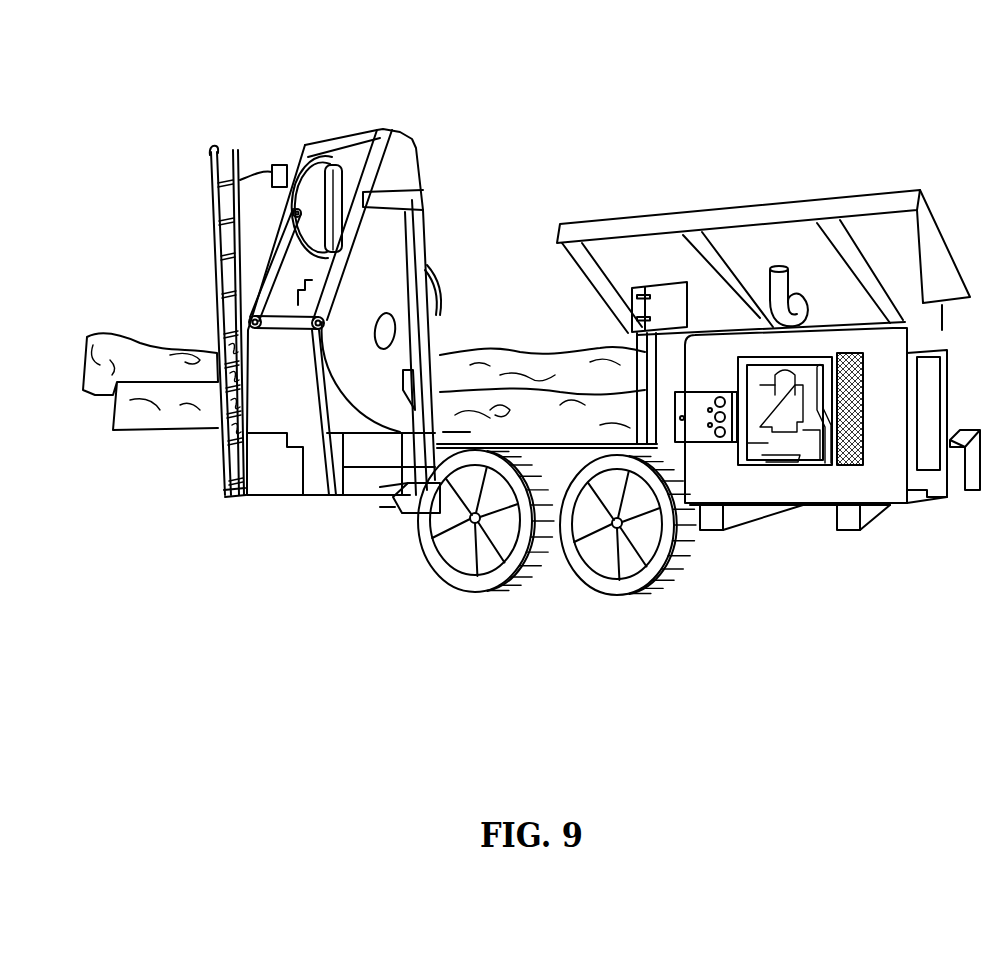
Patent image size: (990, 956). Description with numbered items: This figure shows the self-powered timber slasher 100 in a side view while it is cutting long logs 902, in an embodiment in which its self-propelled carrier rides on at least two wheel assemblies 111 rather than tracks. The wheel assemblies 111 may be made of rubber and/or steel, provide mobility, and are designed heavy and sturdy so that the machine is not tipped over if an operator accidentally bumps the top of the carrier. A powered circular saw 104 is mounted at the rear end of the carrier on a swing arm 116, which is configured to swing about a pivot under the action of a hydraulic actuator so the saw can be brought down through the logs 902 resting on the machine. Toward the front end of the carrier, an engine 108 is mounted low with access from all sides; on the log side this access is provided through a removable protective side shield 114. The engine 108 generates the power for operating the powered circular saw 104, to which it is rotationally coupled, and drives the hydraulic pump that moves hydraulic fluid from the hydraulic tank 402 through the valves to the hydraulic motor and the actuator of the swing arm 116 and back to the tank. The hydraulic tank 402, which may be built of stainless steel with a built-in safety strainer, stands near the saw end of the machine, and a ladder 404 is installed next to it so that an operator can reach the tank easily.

The self-powered timber slasher 100 is at (718, 108).
The powered circular saw 104 is at (393, 267).
The engine 108 is at (800, 453).
The wheel assemblies 111 is at (610, 585).
The removable protective side shield 114 is at (897, 193).
The swing arm 116 is at (230, 383).
The hydraulic tank 402 is at (265, 195).
The ladder 404 is at (213, 207).
The long logs 902 is at (158, 335).